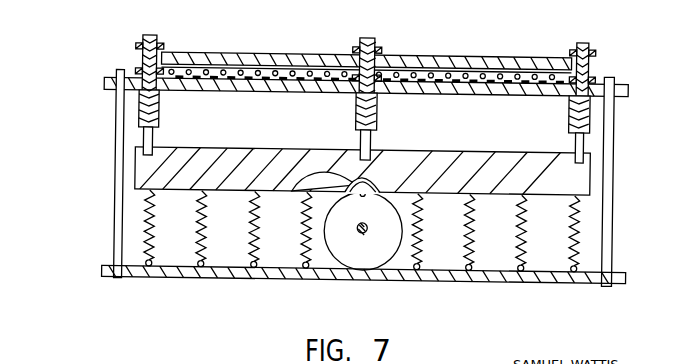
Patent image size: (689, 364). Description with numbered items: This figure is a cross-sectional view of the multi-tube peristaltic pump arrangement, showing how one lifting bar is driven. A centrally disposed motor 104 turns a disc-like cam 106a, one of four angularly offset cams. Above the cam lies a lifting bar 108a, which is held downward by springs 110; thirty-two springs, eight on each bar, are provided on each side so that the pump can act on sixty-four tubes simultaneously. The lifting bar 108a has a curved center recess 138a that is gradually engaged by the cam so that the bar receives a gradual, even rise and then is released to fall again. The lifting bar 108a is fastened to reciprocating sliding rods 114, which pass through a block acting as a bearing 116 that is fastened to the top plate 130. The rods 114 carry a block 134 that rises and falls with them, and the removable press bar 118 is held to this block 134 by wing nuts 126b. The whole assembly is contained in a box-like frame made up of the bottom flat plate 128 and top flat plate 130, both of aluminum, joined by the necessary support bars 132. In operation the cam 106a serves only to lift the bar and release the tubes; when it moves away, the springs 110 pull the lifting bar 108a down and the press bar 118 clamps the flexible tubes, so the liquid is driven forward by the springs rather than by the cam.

The motor 104 is at (363, 231).
The cam 106a is at (375, 184).
The lifting bar 108a is at (235, 160).
The springs 110 is at (567, 217).
The rod 114 is at (576, 148).
The bearing 116 is at (377, 137).
The press bar 118 is at (297, 55).
The wing nuts 126b is at (153, 41).
The bottom flat plate 128 is at (256, 280).
The top flat plate 130 is at (595, 82).
The support bars 132 is at (118, 122).
The block 134 is at (377, 89).
The curved center recess 138a is at (322, 177).